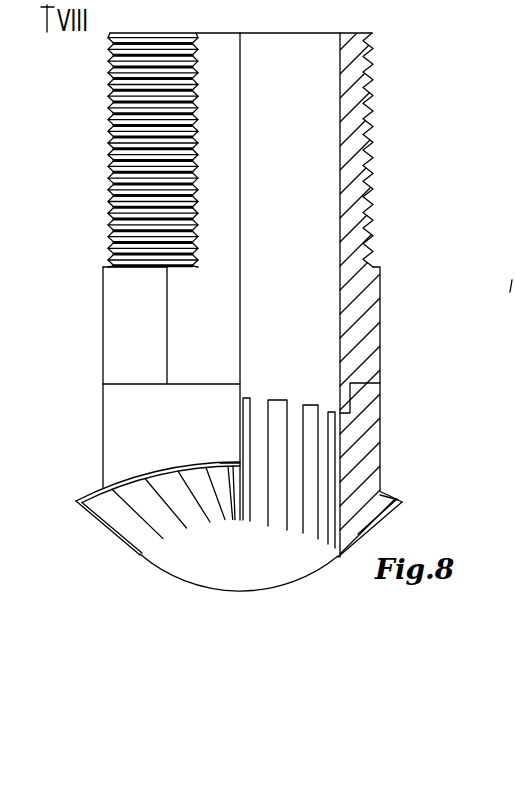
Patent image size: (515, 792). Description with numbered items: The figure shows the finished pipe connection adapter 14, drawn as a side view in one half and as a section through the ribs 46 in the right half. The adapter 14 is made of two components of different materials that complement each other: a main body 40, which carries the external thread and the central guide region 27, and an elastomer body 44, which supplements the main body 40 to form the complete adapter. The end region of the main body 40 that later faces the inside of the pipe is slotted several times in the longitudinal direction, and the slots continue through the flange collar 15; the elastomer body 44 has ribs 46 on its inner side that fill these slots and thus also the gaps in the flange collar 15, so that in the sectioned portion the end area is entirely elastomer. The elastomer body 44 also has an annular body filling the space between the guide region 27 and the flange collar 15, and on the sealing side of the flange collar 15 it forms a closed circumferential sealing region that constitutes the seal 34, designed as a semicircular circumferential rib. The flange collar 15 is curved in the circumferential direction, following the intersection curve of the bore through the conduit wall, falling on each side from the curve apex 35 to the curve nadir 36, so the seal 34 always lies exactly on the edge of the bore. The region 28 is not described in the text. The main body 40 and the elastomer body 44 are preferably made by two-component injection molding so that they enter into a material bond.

The pipe connection adapter 14 is at (513, 92).
The flange collar 15 is at (287, 538).
The central guide region 27 is at (381, 350).
The threaded shaft body 28 is at (222, 325).
The seal 34 is at (393, 489).
The curve apex 35 is at (236, 460).
The curve nadir 36 is at (73, 505).
The main body 40 is at (378, 290).
The elastomer body 44 is at (97, 434).
The ribs 46 is at (368, 443).